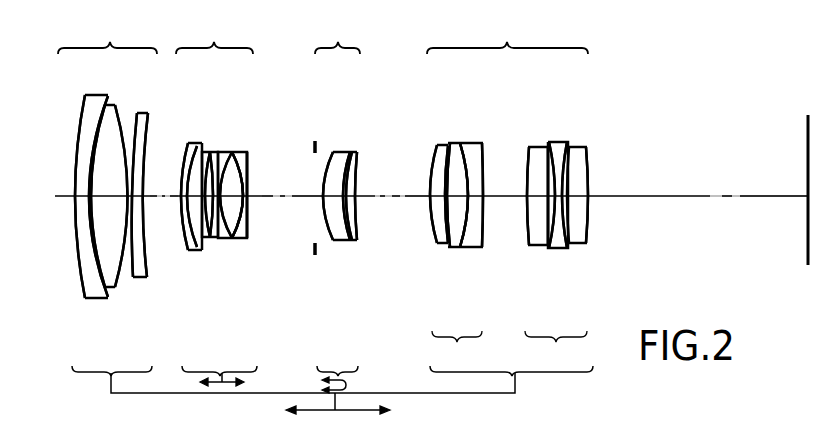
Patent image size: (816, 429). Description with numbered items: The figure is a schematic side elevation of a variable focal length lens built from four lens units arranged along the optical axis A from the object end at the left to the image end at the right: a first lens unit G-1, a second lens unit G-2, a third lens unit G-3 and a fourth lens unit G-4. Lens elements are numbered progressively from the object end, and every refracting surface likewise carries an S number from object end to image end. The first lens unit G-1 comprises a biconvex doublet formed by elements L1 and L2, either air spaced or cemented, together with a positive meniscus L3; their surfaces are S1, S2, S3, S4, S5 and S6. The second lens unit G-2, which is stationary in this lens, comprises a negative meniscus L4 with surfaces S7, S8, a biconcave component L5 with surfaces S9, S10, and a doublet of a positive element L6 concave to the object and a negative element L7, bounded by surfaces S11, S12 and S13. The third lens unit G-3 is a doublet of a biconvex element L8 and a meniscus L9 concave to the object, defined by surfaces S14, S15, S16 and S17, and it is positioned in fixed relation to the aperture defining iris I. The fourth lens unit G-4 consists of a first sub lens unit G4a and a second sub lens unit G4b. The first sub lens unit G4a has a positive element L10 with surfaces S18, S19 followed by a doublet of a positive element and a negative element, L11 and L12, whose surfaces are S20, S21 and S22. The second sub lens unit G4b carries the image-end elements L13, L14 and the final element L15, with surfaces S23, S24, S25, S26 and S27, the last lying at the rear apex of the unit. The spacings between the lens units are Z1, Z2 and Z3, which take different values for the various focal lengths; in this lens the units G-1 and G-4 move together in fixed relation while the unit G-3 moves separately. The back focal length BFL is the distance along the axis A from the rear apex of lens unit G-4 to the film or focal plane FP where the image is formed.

The first lens unit G-1 is at (107, 35).
The second lens unit G-2 is at (214, 35).
The third lens unit G-3 is at (340, 35).
The fourth lens unit G-4 is at (507, 35).
The first sub lens unit G4a is at (457, 346).
The second sub lens unit G4b is at (556, 346).
The biconvex doublet element L1 is at (100, 103).
The doublet element L2 is at (113, 125).
The positive meniscus L3 is at (143, 137).
The negative meniscus L4 is at (190, 147).
The biconcave component L5 is at (210, 150).
The positive element L6 is at (237, 160).
The negative element L7 is at (243, 167).
The biconvex element L8 is at (334, 163).
The meniscus L9 is at (350, 163).
The positive element L10 is at (441, 157).
The doublet element L11 is at (462, 147).
The doublet element L12 is at (474, 148).
The lens element L13 is at (542, 147).
The lens element L14 is at (560, 143).
The lens element L15 is at (578, 167).
The lens element surface S1 is at (77, 257).
The lens element surface S2 is at (97, 263).
The lens element surface S3 is at (100, 280).
The lens element surface S4 is at (118, 292).
The lens element surface S5 is at (133, 277).
The lens element surface S6 is at (148, 262).
The lens element surface S7 is at (181, 222).
The lens element surface S8 is at (191, 215).
The lens element surface S9 is at (205, 237).
The lens element surface S10 is at (216, 237).
The lens element surface S11 is at (230, 238).
The lens element surface S12 is at (246, 226).
The lens element surface S13 is at (249, 213).
The lens element surface S14 is at (330, 243).
The lens element surface S15 is at (346, 243).
The lens element surface S16 is at (352, 230).
The lens element surface S17 is at (360, 211).
The lens element surface S18 is at (432, 230).
The lens element surface S19 is at (445, 240).
The lens element surface S20 is at (449, 241).
The lens element surface S21 is at (467, 231).
The lens element surface S22 is at (484, 223).
The lens element surface S23 is at (528, 199).
The lens element surface S24 is at (546, 240).
The lens element surface S25 is at (552, 234).
The lens element surface S26 is at (562, 224).
The lens element surface S27 is at (588, 213).
The aperture defining iris I is at (316, 263).
The lens unit spacing Z1 is at (163, 186).
The lens unit spacing Z2 is at (292, 185).
The lens unit spacing Z3 is at (402, 185).
The back focal length BFL is at (713, 181).
The focal plane FP is at (807, 152).
The optical axis A is at (762, 198).